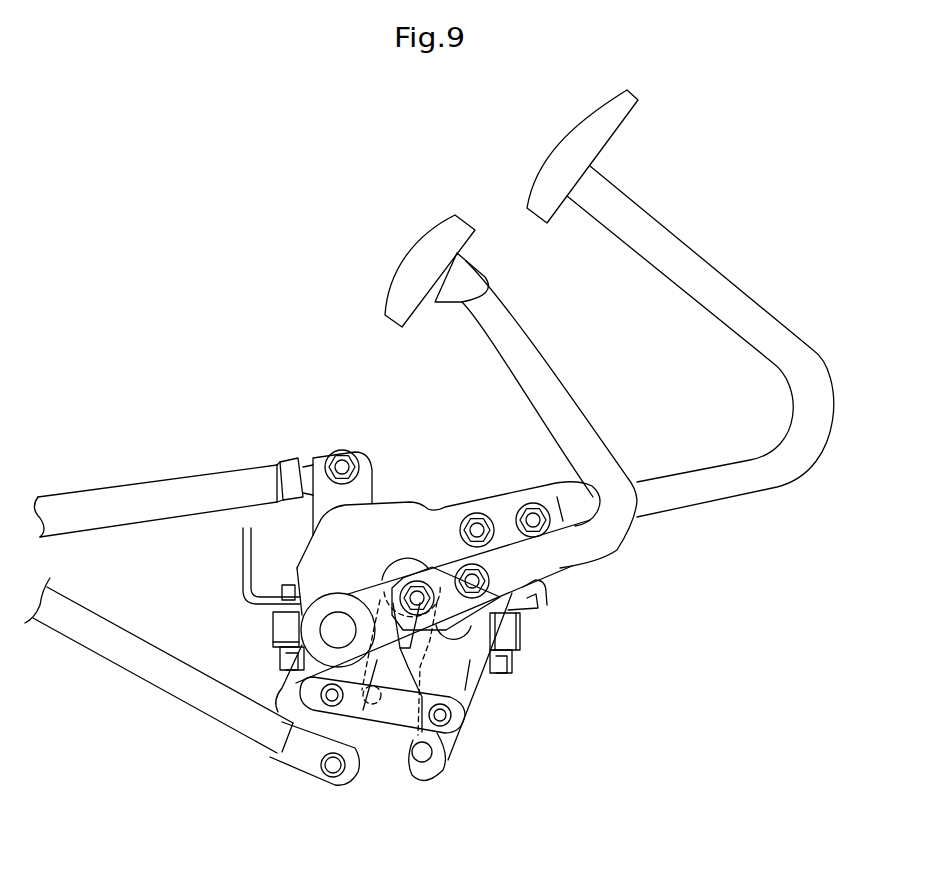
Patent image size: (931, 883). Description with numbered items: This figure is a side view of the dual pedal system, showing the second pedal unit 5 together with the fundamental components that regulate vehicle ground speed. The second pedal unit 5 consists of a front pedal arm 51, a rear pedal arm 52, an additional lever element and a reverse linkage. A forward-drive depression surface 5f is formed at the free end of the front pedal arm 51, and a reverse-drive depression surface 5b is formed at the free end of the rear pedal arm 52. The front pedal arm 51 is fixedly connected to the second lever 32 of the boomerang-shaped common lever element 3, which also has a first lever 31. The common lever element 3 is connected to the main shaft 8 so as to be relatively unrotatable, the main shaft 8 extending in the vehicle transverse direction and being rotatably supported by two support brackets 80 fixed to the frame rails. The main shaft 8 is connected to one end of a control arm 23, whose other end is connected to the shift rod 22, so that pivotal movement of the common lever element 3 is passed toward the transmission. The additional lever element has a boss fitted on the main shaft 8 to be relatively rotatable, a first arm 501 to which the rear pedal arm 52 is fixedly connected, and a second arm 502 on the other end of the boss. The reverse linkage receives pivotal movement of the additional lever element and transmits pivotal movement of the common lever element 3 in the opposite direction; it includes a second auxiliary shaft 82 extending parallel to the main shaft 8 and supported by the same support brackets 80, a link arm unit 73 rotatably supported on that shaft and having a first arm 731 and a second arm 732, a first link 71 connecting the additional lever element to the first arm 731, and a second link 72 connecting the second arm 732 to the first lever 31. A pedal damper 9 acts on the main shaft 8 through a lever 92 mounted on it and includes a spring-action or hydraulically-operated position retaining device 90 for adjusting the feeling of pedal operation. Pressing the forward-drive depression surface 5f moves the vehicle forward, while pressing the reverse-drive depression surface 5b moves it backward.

The second pedal unit 5 is at (681, 159).
The forward-drive depression surface 5f is at (571, 152).
The reverse-drive depression surface 5b is at (422, 262).
The front pedal arm 51 is at (716, 282).
The rear pedal arm 52 is at (543, 381).
The second lever 32 is at (490, 497).
The lever 92 is at (377, 484).
The pedal damper 9 is at (110, 486).
The position retaining device 90 is at (183, 492).
The common lever element 3 is at (292, 572).
The support bracket 80 is at (270, 630).
The main shaft 8 is at (335, 633).
The shift rod 22 is at (122, 650).
The control arm 23 is at (333, 730).
The first link 71 is at (388, 680).
The second link 72 is at (418, 700).
The first lever 31 is at (435, 763).
The first arm 501 is at (373, 597).
The second arm 502 is at (317, 672).
The second arm 732 is at (406, 583).
The second auxiliary shaft 82 is at (520, 638).
The link arm unit 73 is at (483, 678).
The first arm 731 is at (455, 687).